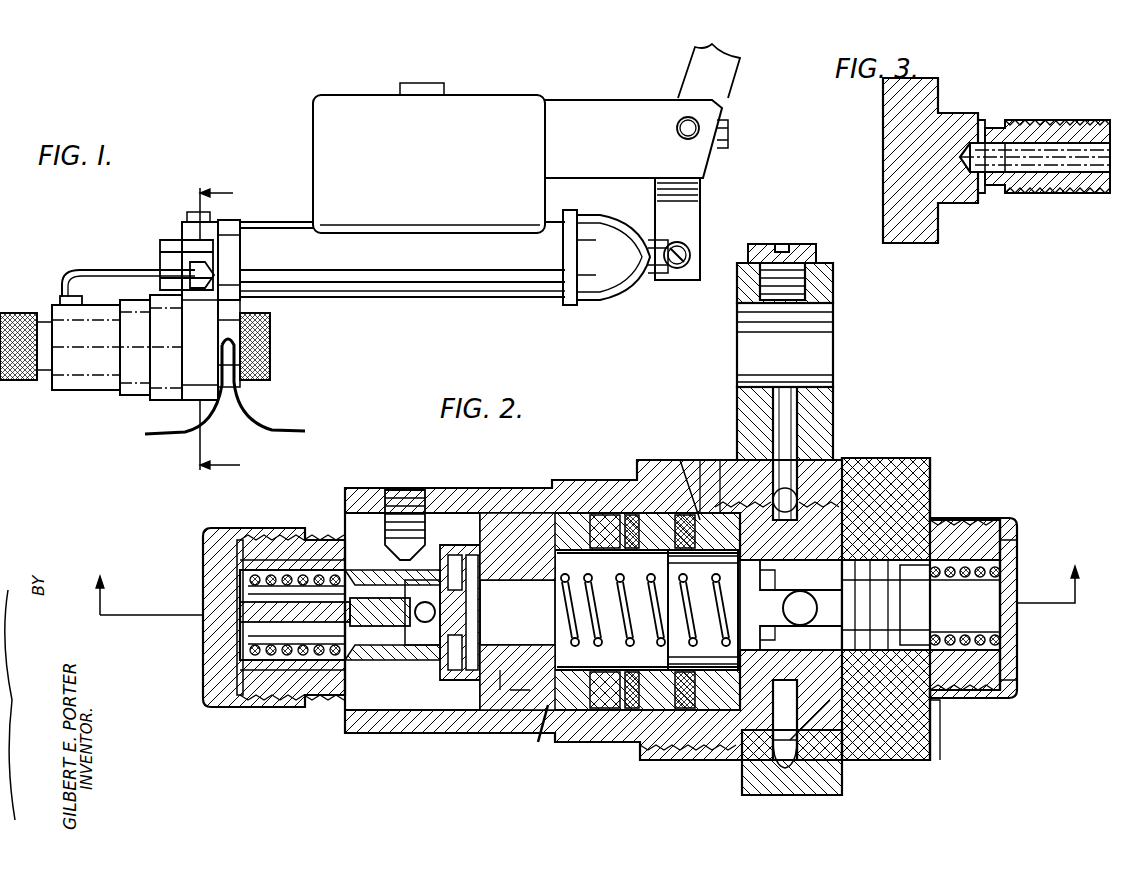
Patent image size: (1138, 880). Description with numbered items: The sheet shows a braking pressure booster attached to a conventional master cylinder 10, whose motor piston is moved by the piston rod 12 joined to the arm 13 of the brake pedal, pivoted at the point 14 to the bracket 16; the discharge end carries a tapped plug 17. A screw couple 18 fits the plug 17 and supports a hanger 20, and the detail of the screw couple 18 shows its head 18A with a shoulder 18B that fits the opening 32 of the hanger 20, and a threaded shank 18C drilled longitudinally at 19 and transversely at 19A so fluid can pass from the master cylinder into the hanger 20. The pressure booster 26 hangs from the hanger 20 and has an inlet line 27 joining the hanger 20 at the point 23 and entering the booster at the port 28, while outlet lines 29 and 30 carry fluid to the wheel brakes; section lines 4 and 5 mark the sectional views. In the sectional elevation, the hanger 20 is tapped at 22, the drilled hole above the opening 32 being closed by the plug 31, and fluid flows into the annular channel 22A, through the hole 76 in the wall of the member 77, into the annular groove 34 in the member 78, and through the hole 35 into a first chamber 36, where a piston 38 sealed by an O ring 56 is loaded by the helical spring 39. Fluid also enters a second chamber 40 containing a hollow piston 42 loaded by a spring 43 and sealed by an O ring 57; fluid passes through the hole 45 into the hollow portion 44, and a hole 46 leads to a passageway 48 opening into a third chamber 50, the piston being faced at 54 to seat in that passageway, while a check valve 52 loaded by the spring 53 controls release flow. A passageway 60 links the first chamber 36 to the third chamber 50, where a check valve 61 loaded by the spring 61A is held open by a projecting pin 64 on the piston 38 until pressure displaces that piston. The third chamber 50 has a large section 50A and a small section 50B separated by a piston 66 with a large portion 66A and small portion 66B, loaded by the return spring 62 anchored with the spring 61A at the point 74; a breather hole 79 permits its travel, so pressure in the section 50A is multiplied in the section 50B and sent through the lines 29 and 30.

In FIG. 2, the section line 4- 4 is at (587, 581).
In FIG. 1, the section line 5- 5 is at (227, 330).
In FIG. 1, the master cylinder 10 is at (436, 300).
In FIG. 1, the piston rod 12 is at (655, 280).
In FIG. 1, the arm 13 is at (700, 232).
In FIG. 1, the pivot point 14 is at (680, 120).
In FIG. 1, the bracket 16 is at (510, 95).
In FIG. 1, the plug 17 is at (232, 225).
In FIG. 1, the screw couple 18 is at (162, 245).
In FIG. 3, the screw couple 18 is at (883, 160).
In FIG. 3, the head 18A is at (883, 195).
In FIG. 3, the shoulder 18B is at (975, 120).
In FIG. 3, the threaded shank 18C is at (1058, 120).
In FIG. 3, the longitudinal drilling 19 is at (1070, 194).
In FIG. 3, the transverse drilling 19A is at (993, 195).
In FIG. 1, the hanger 20 is at (185, 400).
In FIG. 2, the hanger 20 is at (833, 285).
In FIG. 2, the hole 22 is at (790, 430).
In FIG. 2, the annular channel 22A is at (783, 770).
In FIG. 1, the point 23 is at (192, 270).
In FIG. 1, the pressure booster 26 is at (85, 392).
In FIG. 2, the pressure booster 26 is at (546, 482).
In FIG. 1, the inlet line 27 is at (90, 270).
In FIG. 1, the port 28 is at (62, 297).
In FIG. 2, the port 28 is at (405, 520).
In FIG. 1, the outlet line 29 is at (292, 430).
In FIG. 1, the outlet line 30 is at (170, 436).
In FIG. 2, the plug 31 is at (810, 246).
In FIG. 2, the opening 32 is at (833, 350).
In FIG. 2, the annular groove 34 is at (832, 765).
In FIG. 2, the hole 35 is at (870, 520).
In FIG. 2, the first chamber 36 is at (900, 655).
In FIG. 2, the piston 38 is at (935, 540).
In FIG. 2, the helical spring 39 is at (1012, 560).
In FIG. 2, the second chamber 40 is at (430, 560).
In FIG. 2, the piston 42 is at (328, 708).
In FIG. 2, the spring 43 is at (235, 590).
In FIG. 2, the hollow portion 44 is at (380, 603).
In FIG. 2, the hole 45 is at (390, 540).
In FIG. 2, the hole 46 is at (420, 690).
In FIG. 2, the passageway 48 is at (472, 545).
In FIG. 2, the third chamber 50 is at (512, 710).
In FIG. 2, the section 50A is at (478, 700).
In FIG. 2, the section 50B is at (665, 515).
In FIG. 2, the check valve 52 is at (382, 710).
In FIG. 2, the spring 53 is at (342, 710).
In FIG. 2, the face 54 is at (455, 545).
In FIG. 2, the O ring 56 is at (900, 560).
In FIG. 2, the O ring 57 is at (418, 603).
In FIG. 2, the passageway 60 is at (880, 760).
In FIG. 2, the check valve 61 is at (752, 700).
In FIG. 2, the spring 61A is at (786, 598).
In FIG. 2, the spring 62 is at (582, 700).
In FIG. 2, the projecting pin 64 is at (700, 515).
In FIG. 2, the piston 66 is at (620, 560).
In FIG. 2, the portion 66A is at (580, 515).
In FIG. 2, the portion 66B is at (620, 515).
In FIG. 2, the point 74 is at (695, 745).
In FIG. 2, the hole 76 is at (800, 490).
In FIG. 2, the member 77 is at (543, 742).
In FIG. 2, the member 78 is at (935, 742).
In FIG. 2, the breather hole 79 is at (515, 700).